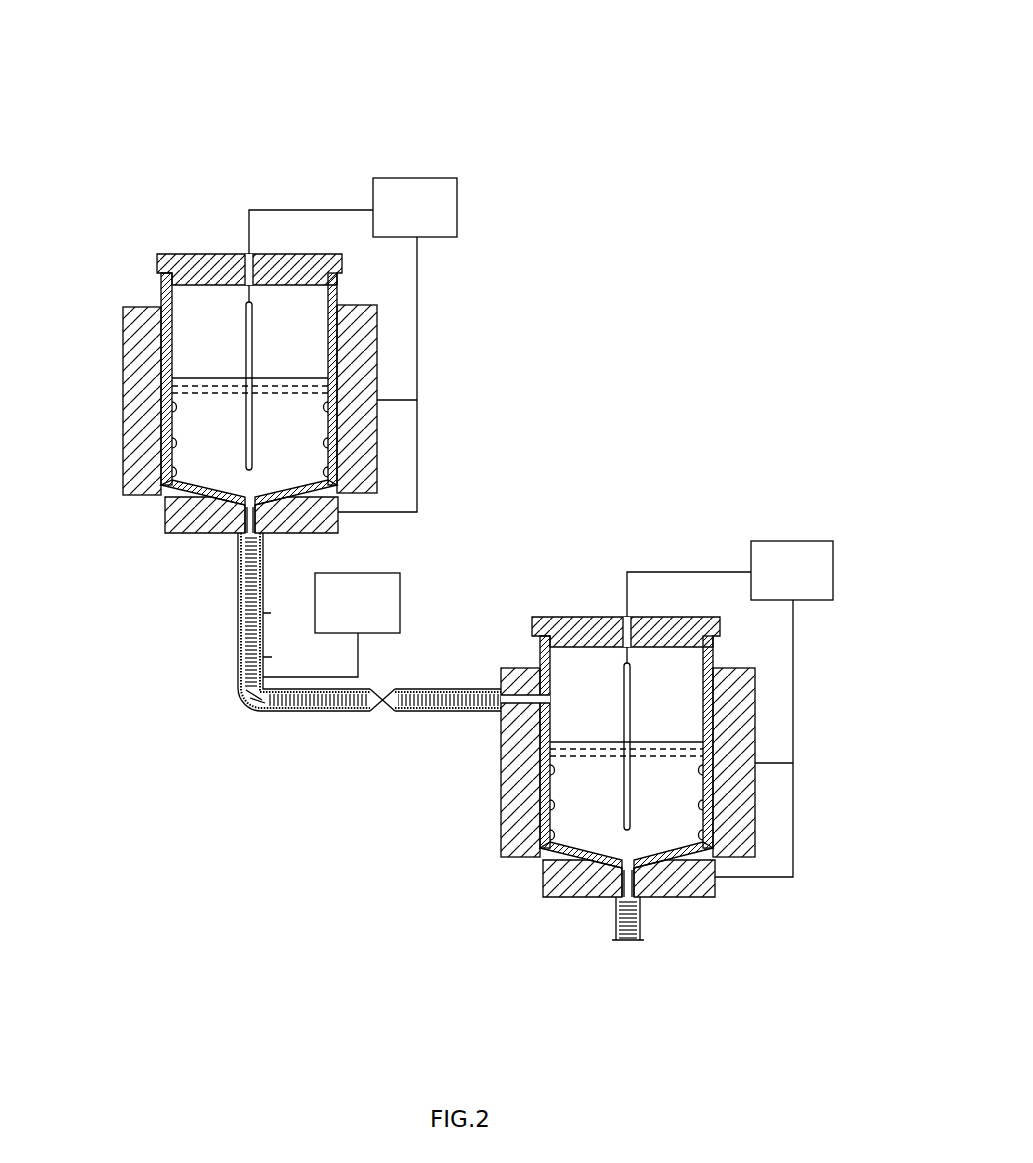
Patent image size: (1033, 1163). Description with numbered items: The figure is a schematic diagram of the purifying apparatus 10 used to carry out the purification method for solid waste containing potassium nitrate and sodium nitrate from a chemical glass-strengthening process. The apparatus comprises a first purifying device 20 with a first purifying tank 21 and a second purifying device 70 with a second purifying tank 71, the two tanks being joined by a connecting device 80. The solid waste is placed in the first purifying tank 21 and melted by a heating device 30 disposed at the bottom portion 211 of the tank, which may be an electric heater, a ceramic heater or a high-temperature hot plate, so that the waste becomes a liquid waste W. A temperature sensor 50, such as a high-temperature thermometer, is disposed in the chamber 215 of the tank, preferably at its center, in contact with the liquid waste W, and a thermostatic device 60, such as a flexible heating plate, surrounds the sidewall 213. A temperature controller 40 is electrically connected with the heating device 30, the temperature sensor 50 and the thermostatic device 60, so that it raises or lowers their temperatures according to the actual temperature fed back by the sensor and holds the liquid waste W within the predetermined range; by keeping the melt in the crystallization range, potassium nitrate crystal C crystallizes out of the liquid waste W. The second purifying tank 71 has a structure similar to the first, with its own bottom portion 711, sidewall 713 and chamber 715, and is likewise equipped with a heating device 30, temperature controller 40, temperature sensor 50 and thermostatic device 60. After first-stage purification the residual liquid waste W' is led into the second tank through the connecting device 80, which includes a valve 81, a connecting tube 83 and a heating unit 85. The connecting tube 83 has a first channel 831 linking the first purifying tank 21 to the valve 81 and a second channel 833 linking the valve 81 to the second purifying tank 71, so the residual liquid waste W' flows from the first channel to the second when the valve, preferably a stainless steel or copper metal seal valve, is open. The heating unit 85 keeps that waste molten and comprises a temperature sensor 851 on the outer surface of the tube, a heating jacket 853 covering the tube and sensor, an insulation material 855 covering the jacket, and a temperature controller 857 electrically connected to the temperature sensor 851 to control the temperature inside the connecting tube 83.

The purifying apparatus 10 is at (621, 94).
The first purifying device 20 is at (179, 233).
The first purifying tank 21 is at (154, 279).
The bottom portion 211 is at (190, 497).
The sidewall 213 is at (168, 352).
The chamber 215 is at (215, 300).
The heating device 30 is at (300, 515).
The temperature controller 40 is at (410, 195).
The temperature sensor 50 is at (248, 320).
The thermostatic device 60 is at (140, 310).
The second purifying device 70 is at (592, 588).
The second purifying tank 71 is at (529, 637).
The bottom portion of second purifying tank 711 is at (672, 860).
The sidewall of second purifying tank 713 is at (520, 722).
The chamber of second purifying tank 715 is at (572, 676).
The connecting device 80 is at (233, 691).
The valve 81 is at (385, 692).
The connecting tube 83 is at (245, 525).
The first channel 831 is at (298, 715).
The second channel 833 is at (405, 712).
The heating unit 85 is at (401, 566).
The temperature sensor 851 is at (265, 643).
The heating jacket 853 is at (240, 583).
The insulation material 855 is at (240, 633).
The temperature controller 857 is at (375, 595).
The potassium nitrate crystal C is at (172, 443).
The liquid waste W is at (213, 460).
The residual liquid waste W' is at (567, 836).